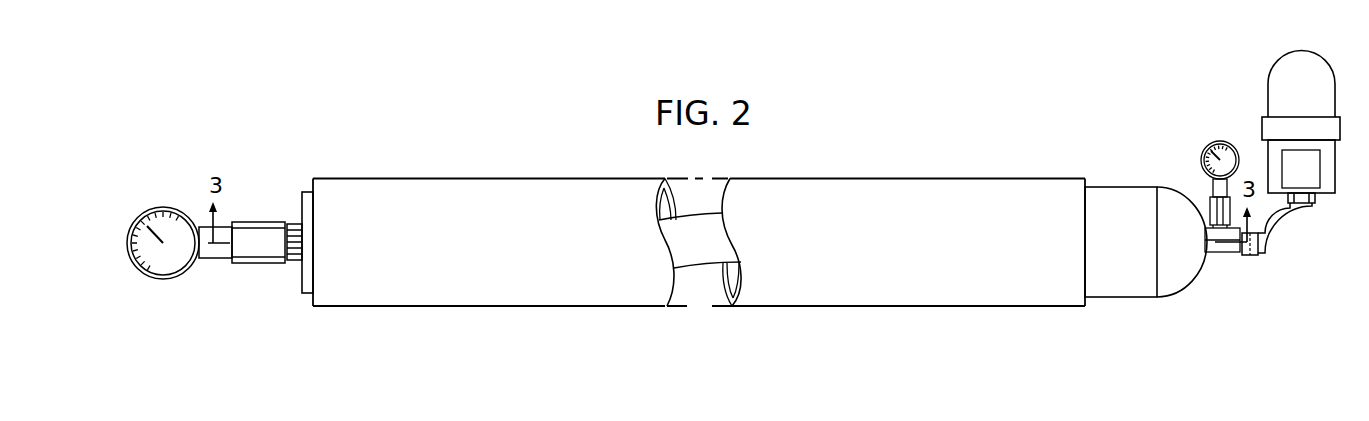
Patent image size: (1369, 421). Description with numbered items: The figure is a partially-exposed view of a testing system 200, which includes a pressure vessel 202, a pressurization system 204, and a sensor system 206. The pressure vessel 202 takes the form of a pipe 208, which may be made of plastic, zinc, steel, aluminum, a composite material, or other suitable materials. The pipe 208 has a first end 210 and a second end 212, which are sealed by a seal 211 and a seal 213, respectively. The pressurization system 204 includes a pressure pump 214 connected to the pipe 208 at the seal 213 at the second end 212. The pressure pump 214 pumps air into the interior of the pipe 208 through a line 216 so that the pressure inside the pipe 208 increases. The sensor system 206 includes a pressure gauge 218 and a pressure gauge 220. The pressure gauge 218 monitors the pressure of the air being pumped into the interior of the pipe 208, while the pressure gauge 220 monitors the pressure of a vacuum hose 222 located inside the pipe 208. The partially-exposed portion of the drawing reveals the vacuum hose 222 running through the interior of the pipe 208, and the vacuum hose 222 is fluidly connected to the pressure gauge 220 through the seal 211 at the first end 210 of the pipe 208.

The testing system 200 is at (410, 140).
The pressure vessel 202 is at (507, 178).
The pressurization system 204 is at (1261, 116).
The sensor system 206 is at (178, 234).
The pipe 208 is at (588, 178).
The first end 210 is at (305, 180).
The seal 211 is at (302, 212).
The second end 212 is at (1078, 172).
The seal 213 is at (1127, 308).
The pressure pump 214 is at (1248, 100).
The line 216 is at (1277, 255).
The pressure gauge 218 is at (1202, 158).
The pressure gauge 220 is at (160, 280).
The vacuum hose 222 is at (703, 282).